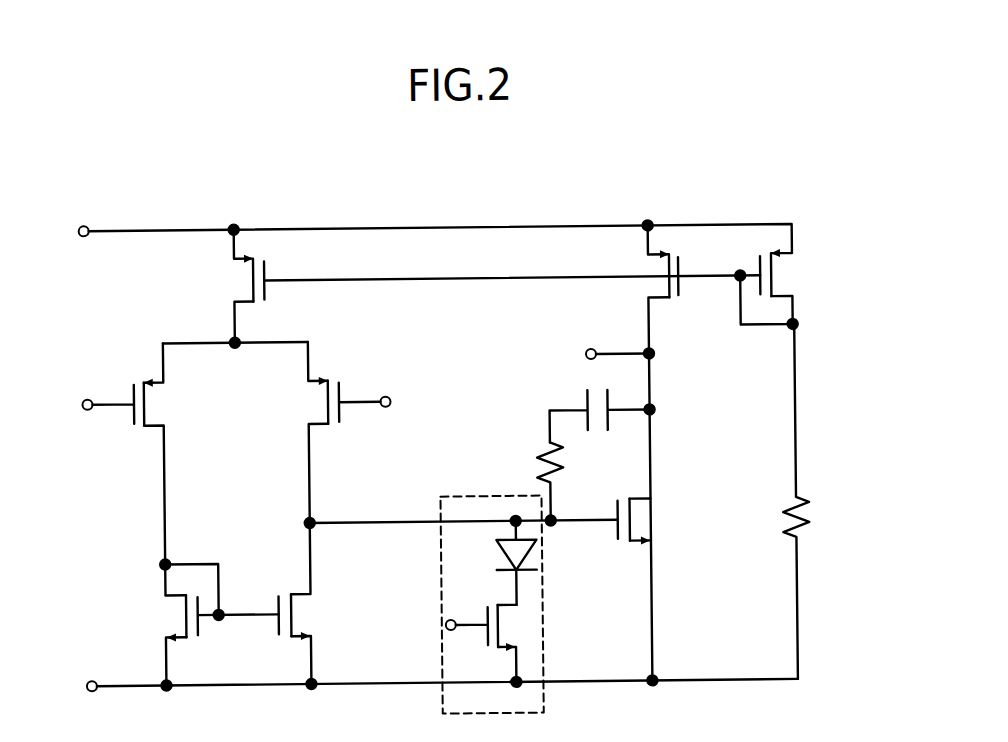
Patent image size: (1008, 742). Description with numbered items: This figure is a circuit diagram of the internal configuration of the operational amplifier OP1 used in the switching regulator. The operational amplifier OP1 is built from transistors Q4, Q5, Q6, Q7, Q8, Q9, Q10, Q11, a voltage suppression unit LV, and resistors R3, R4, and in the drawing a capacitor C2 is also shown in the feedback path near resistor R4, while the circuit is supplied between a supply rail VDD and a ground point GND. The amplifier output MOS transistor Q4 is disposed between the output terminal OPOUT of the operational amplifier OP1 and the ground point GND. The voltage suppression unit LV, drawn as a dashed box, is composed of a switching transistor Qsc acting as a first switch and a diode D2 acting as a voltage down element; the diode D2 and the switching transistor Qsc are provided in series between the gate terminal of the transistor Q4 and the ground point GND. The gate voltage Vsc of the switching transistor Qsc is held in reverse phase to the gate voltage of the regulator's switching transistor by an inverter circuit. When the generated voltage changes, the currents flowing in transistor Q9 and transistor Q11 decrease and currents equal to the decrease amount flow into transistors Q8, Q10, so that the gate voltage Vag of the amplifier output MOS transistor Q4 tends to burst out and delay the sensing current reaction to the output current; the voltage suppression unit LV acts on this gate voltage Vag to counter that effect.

The operational amplifier OP1 is at (528, 205).
The amplifier output MOS transistor Q4 is at (650, 505).
The transistor Q5 is at (795, 260).
The transistor Q6 is at (644, 256).
The transistor Q7 is at (266, 300).
The transistor Q8 is at (330, 424).
The transistor Q9 is at (44, 383).
The transistor Q10 is at (311, 596).
The transistor Q11 is at (166, 591).
The switching transistor Qsc is at (516, 606).
The diode D2 is at (536, 553).
The resistor R3 is at (808, 527).
The resistor R4 is at (532, 462).
The capacitor C2 is at (588, 391).
The voltage suppression unit LV is at (541, 713).
The power supply terminal VDD is at (84, 224).
The ground point GND is at (88, 680).
The output terminal OPOUT is at (587, 348).
The gate voltage Vag is at (485, 541).
The gate voltage Vsc is at (455, 619).